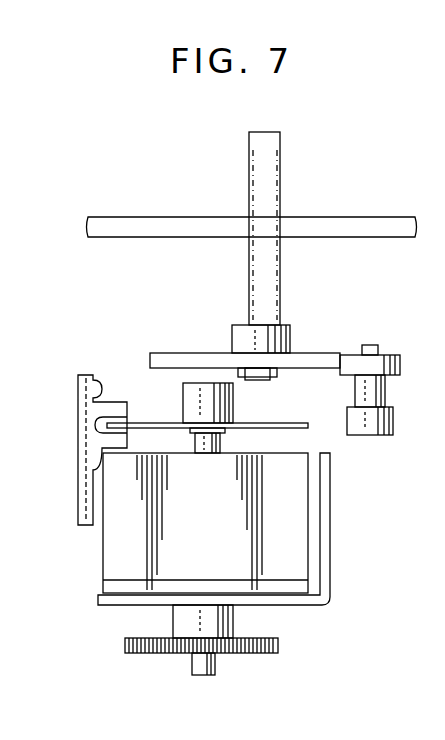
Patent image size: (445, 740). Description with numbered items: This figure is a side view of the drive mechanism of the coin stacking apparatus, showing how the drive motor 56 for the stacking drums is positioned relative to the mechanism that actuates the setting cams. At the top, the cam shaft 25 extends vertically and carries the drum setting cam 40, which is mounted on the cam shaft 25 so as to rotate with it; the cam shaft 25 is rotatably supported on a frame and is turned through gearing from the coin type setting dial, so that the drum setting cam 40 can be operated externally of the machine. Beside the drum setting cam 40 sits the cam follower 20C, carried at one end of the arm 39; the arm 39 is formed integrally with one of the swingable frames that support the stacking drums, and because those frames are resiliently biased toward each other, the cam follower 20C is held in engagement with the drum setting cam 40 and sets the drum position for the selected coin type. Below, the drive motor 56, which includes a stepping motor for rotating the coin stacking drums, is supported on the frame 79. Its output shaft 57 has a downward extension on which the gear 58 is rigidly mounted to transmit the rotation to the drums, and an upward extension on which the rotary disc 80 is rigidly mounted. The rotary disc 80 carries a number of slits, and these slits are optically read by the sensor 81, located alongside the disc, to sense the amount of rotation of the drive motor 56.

The cam shaft 25 is at (273, 303).
The drum setting cam 40 is at (319, 358).
The cam follower 20C is at (395, 355).
The arm 39 is at (368, 425).
The sensor 81 is at (113, 405).
The rotary disc 80 is at (282, 420).
The output shaft 57 is at (222, 444).
The drive motor 56 is at (295, 529).
The frame 79 is at (331, 568).
The gear 58 is at (280, 650).